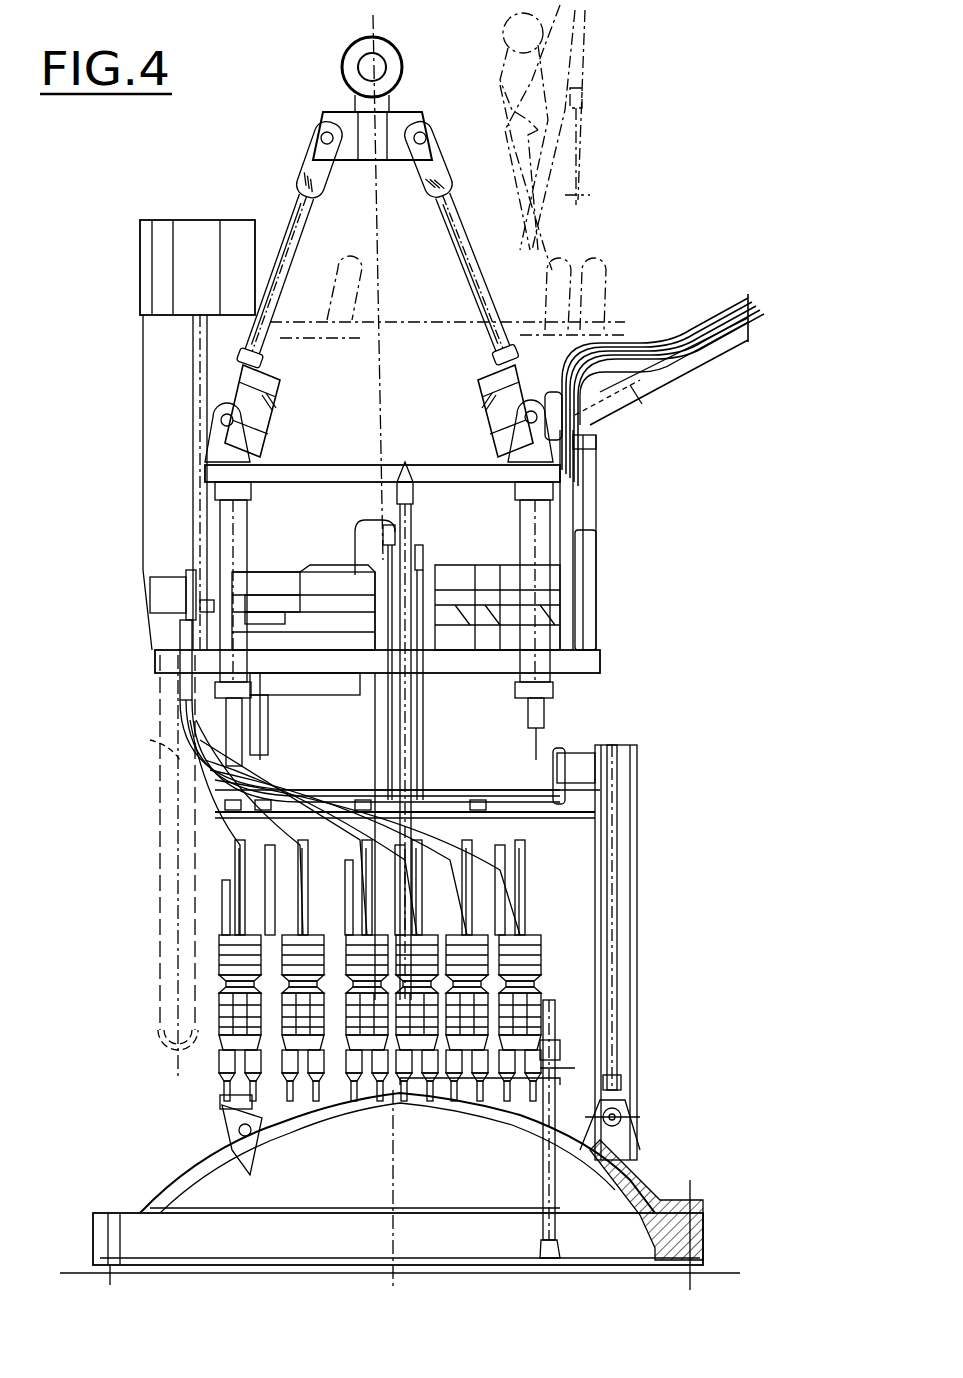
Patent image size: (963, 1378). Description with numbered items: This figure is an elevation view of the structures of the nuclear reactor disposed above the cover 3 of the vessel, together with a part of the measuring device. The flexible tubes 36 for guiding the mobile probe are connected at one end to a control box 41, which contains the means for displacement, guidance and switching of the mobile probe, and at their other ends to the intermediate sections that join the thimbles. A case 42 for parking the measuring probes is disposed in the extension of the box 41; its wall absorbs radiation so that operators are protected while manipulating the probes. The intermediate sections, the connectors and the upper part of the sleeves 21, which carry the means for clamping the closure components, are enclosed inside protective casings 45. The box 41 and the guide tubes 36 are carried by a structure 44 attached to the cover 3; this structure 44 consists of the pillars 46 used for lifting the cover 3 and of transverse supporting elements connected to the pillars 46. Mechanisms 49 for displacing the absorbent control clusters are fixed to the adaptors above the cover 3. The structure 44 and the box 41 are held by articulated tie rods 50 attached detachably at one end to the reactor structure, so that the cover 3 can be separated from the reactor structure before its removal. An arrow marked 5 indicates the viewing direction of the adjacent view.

The cover of the vessel 3 is at (650, 1200).
The section view arrow 5 is at (122, 449).
The sleeves 21 is at (558, 1096).
The flexible tubes 36 is at (415, 870).
The control box 41 is at (125, 543).
The case for parking the measuring probes 42 is at (175, 880).
The structure 44 is at (608, 503).
The protective casings 45 is at (512, 985).
The pillars 46 is at (400, 738).
The mechanisms for the displacement of the clusters 49 is at (425, 940).
The articulated tie rods 50 is at (440, 224).